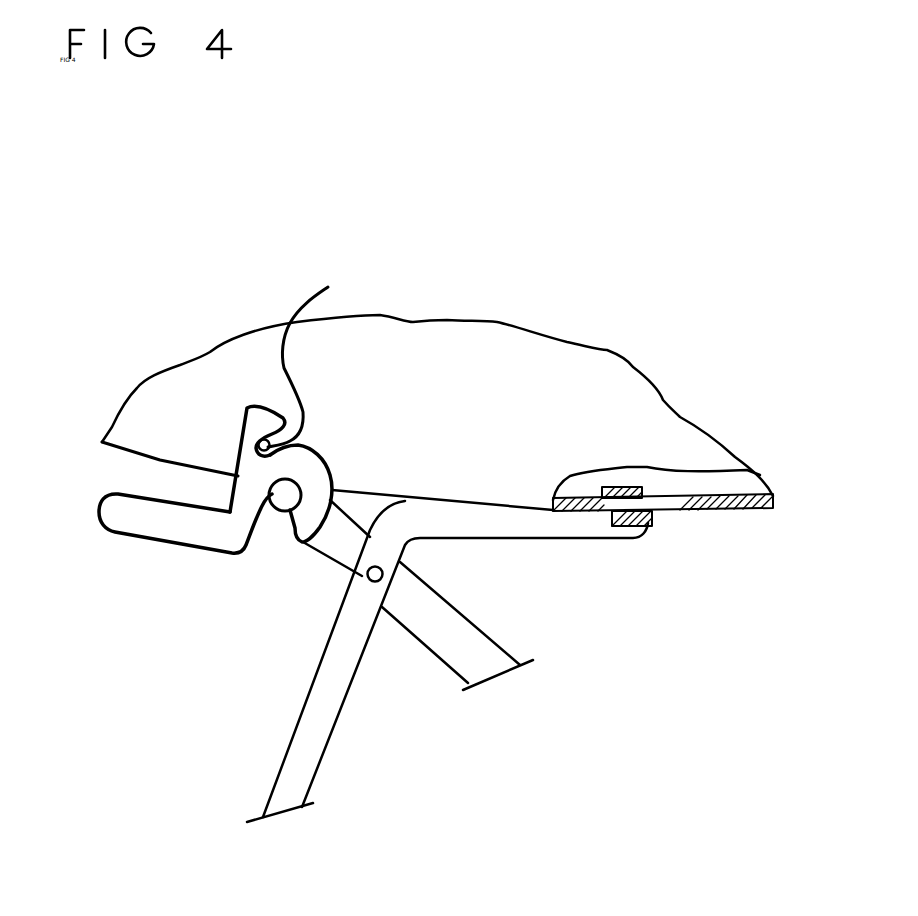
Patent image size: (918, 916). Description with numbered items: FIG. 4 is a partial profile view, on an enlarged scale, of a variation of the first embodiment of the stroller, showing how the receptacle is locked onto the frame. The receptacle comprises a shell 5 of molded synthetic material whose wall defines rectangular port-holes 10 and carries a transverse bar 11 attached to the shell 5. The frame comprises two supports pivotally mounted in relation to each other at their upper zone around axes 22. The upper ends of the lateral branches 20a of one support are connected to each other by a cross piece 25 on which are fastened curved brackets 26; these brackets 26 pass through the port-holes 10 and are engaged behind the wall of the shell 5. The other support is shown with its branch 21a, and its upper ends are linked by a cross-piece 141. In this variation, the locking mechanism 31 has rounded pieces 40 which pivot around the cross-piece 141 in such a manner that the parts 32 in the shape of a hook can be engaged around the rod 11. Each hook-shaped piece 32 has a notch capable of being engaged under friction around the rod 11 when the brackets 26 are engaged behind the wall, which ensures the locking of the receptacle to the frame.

The shell 5 is at (598, 369).
The transverse bar 11 is at (309, 345).
The rounded pieces 40 is at (312, 469).
The cross-piece 141 is at (279, 509).
The hook-shaped pieces 32 is at (233, 430).
The locking mechanism 31 is at (148, 547).
The axes 22 is at (360, 577).
The lateral branches 20a is at (300, 755).
The strut of bracket 21a is at (452, 663).
The port-holes 10 is at (666, 506).
The curved brackets 26 is at (630, 484).
The cross piece 25 is at (643, 529).